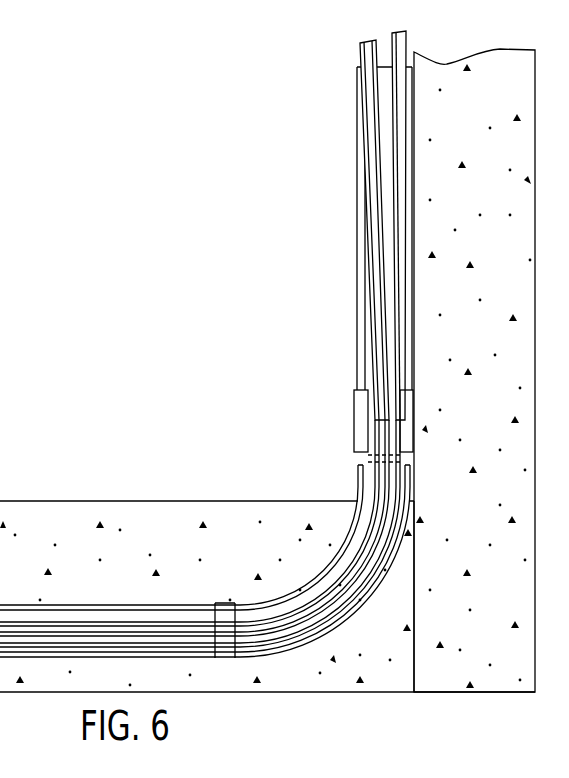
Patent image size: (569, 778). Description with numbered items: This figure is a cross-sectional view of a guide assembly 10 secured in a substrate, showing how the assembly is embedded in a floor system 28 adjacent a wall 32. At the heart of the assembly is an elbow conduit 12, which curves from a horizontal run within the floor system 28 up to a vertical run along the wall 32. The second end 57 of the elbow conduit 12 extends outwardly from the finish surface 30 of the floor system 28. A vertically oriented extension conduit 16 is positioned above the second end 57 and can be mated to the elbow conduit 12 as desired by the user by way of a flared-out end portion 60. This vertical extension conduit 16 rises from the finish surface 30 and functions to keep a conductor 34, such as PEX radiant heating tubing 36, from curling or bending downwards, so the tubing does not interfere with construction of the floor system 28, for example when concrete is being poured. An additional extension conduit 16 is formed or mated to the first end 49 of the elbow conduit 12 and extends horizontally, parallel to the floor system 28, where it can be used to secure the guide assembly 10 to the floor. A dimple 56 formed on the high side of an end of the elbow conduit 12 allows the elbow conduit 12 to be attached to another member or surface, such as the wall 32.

The guide assembly 10 is at (300, 264).
The elbow conduit 12 is at (331, 634).
The extension conduit 16 is at (357, 148).
The floor system 28 is at (34, 551).
The finish surface 30 is at (0, 480).
The wall 32 is at (484, 311).
The conductor 34 is at (358, 50).
The radiant heating tube 36 is at (405, 33).
The first end 49 is at (236, 679).
The dimple 56 is at (411, 478).
The second end 57 is at (346, 479).
The flared-out end portion 60 is at (354, 404).